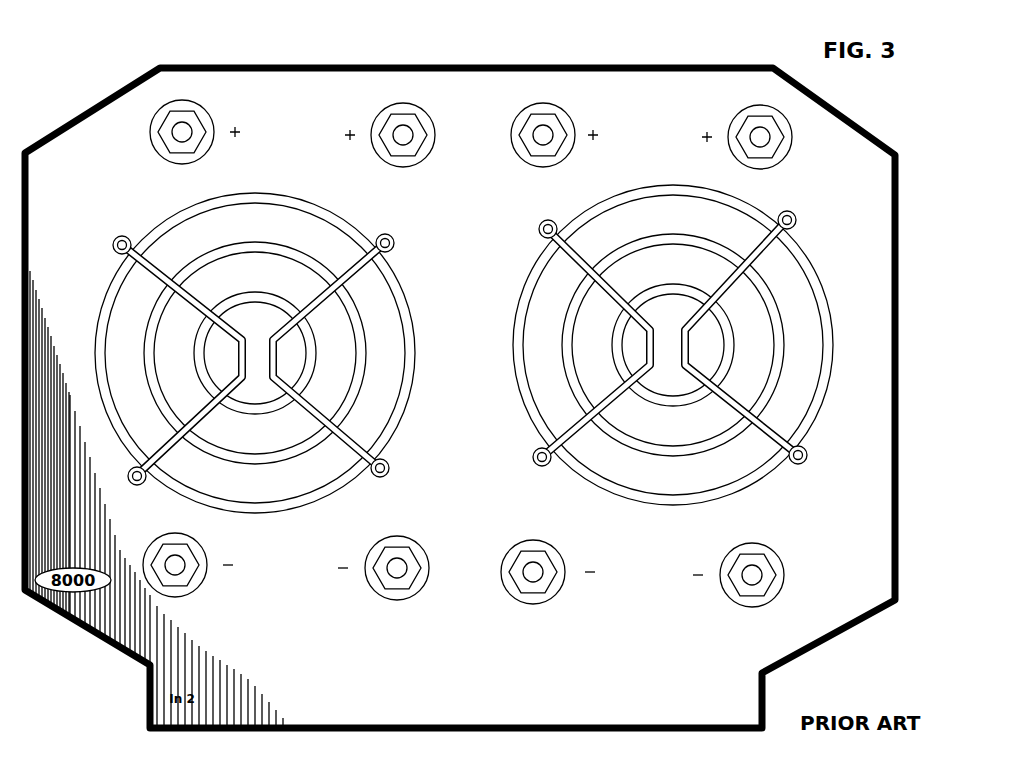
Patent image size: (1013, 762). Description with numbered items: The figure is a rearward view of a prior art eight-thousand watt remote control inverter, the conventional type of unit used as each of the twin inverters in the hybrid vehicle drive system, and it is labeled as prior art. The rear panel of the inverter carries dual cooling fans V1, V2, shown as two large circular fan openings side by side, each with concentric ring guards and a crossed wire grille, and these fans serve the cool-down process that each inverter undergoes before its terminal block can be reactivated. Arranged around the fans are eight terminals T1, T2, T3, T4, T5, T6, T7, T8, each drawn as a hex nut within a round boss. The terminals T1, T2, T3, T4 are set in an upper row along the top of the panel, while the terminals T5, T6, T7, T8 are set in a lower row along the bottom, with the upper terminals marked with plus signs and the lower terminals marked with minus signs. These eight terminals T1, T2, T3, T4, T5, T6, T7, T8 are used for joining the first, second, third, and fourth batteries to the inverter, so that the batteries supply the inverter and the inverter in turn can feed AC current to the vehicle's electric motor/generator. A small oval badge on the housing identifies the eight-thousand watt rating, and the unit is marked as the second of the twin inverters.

The terminal T1 is at (168, 100).
The terminal T2 is at (423, 162).
The terminal T3 is at (522, 110).
The terminal T4 is at (783, 163).
The terminal T5 is at (207, 587).
The terminal T6 is at (425, 595).
The terminal T7 is at (560, 593).
The terminal T8 is at (777, 598).
The cooling fan V1 is at (410, 402).
The cooling fan V2 is at (725, 493).